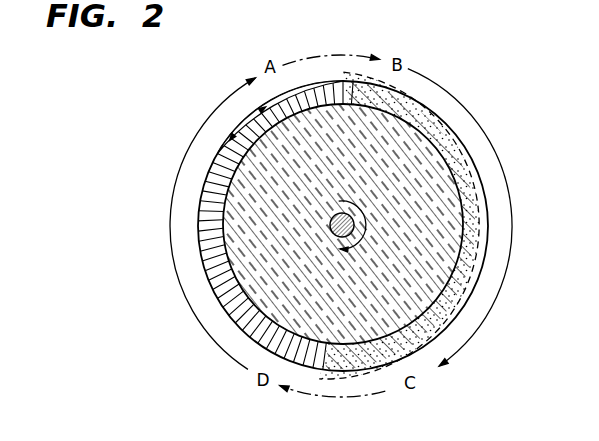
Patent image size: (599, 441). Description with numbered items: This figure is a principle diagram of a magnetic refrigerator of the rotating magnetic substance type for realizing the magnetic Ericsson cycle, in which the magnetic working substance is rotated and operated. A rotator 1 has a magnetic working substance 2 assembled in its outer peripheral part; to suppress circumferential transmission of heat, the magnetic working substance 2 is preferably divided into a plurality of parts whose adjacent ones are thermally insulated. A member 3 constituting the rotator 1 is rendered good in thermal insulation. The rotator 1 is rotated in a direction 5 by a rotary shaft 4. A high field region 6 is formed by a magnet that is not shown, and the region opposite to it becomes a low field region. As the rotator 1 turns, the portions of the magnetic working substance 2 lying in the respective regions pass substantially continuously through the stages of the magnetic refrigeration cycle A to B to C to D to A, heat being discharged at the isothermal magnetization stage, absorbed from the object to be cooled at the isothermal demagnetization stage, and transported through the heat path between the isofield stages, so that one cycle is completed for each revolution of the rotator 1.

The rotator 1 is at (241, 128).
The magnetic working substance 2 is at (225, 163).
The member 3 is at (254, 197).
The rotary shaft 4 is at (330, 222).
The direction 5 is at (367, 215).
The high field region 6 is at (467, 141).